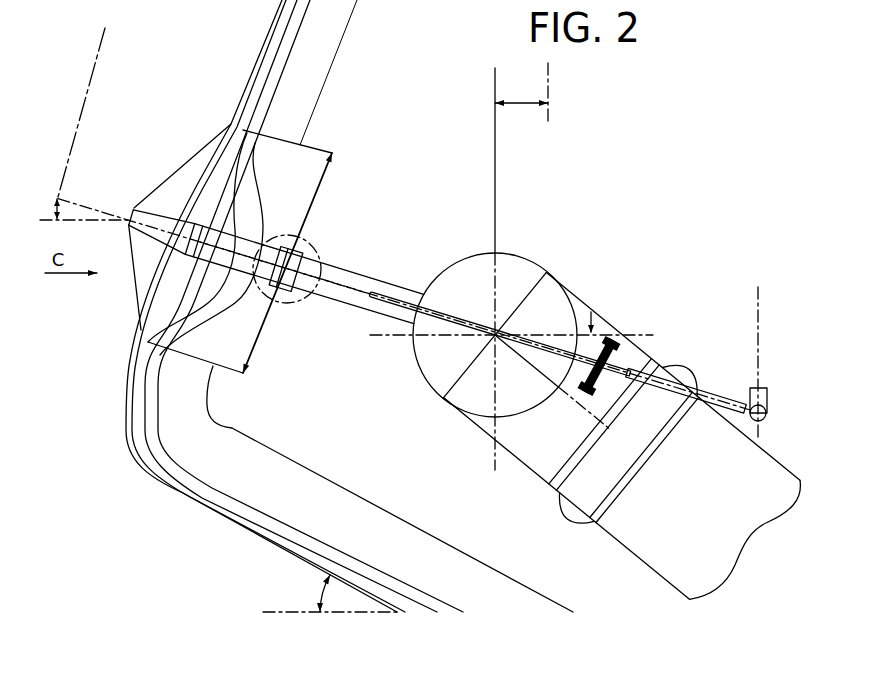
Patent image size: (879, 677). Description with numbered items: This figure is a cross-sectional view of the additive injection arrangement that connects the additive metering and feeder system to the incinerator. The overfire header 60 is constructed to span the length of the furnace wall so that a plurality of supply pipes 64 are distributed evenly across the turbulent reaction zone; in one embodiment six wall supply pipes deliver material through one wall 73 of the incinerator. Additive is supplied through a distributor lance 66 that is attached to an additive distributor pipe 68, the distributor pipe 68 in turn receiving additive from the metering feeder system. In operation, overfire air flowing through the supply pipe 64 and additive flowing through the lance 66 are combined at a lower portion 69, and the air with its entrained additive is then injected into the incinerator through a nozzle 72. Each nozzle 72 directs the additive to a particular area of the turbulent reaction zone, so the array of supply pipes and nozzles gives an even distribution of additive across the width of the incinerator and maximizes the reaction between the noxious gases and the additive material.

The overfire header 60 is at (517, 268).
The supply pipe 64 is at (333, 272).
The distributor lance 66 is at (440, 312).
The additive distributor pipe 68 is at (753, 387).
The lower portion 69 is at (340, 297).
The nozzle 72 is at (137, 212).
The wall 73 is at (252, 100).